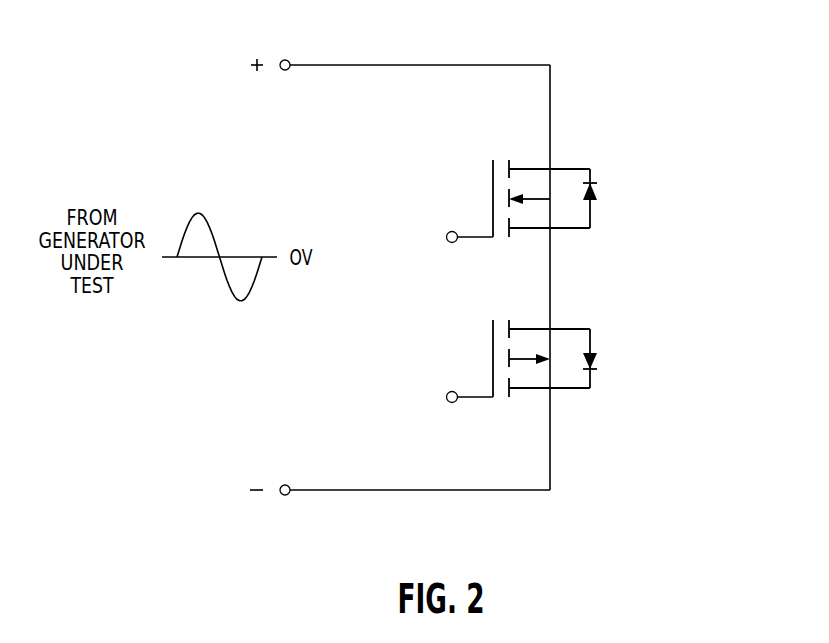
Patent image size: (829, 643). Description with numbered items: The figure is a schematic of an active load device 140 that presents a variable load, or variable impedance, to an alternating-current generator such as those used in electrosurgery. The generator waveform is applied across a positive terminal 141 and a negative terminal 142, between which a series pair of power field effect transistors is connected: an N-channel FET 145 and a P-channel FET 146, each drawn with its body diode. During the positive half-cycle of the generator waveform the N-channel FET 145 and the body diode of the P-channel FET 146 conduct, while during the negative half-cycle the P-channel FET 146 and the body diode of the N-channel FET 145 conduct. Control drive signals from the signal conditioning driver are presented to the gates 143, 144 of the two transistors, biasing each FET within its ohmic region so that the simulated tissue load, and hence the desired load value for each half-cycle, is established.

The active load device 140 is at (170, 50).
The positive input terminal 141 is at (283, 60).
The negative input terminal 142 is at (283, 485).
The gate 143 is at (447, 240).
The gate 144 is at (447, 400).
The N-channel FET 145 is at (586, 166).
The P-channel FET 146 is at (586, 326).